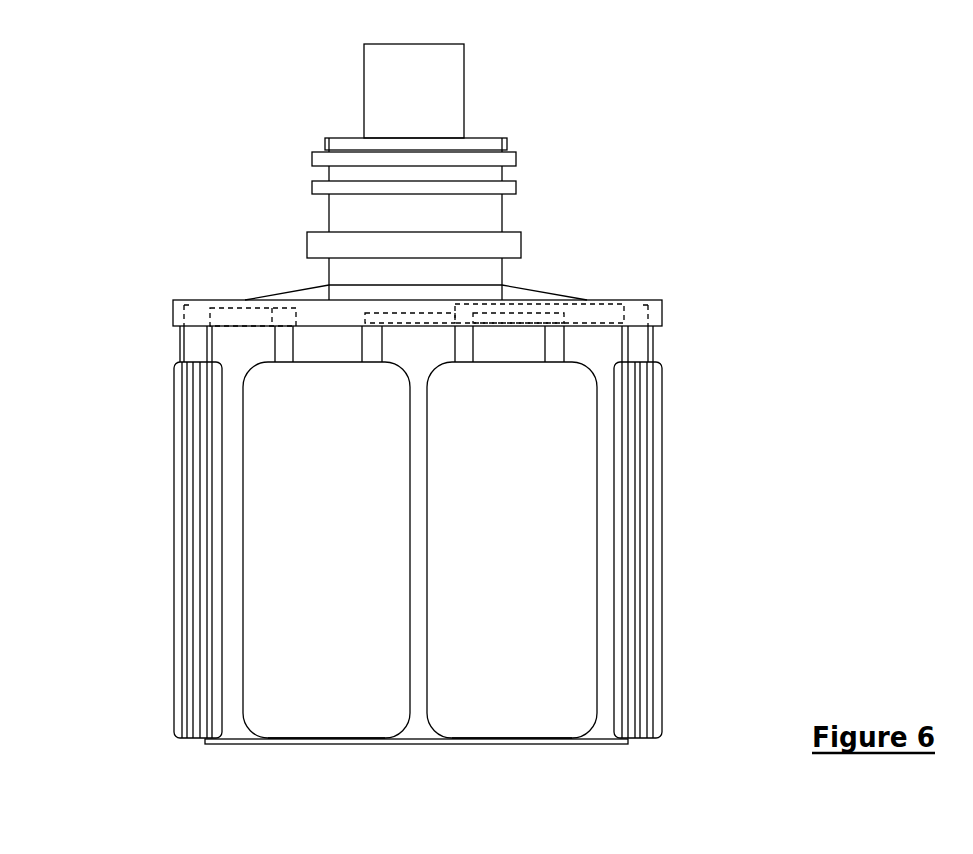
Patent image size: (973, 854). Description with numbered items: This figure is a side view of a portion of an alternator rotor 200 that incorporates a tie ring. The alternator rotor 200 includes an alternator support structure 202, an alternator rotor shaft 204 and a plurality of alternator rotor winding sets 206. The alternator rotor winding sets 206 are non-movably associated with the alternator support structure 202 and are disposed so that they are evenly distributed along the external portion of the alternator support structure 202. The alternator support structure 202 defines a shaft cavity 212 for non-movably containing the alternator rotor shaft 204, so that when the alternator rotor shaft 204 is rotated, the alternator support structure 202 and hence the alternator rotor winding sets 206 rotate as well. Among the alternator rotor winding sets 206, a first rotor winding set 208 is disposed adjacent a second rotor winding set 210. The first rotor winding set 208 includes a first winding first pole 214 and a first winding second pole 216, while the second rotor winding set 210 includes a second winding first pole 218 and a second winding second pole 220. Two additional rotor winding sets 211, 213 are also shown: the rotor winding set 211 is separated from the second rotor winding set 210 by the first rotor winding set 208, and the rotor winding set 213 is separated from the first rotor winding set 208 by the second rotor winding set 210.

The alternator rotor 200 is at (758, 152).
The alternator support structure 202 is at (598, 493).
The alternator rotor shaft 204 is at (458, 102).
The alternator rotor winding sets 206 is at (347, 643).
The first rotor winding set 208 is at (373, 733).
The second rotor winding set 210 is at (557, 732).
The rotor winding set 211 is at (177, 378).
The shaft cavity 212 is at (489, 173).
The rotor winding set 213 is at (658, 652).
The first winding first pole 214 is at (285, 358).
The first winding second pole 216 is at (371, 358).
The second winding first pole 218 is at (462, 355).
The second winding second pole 220 is at (557, 355).